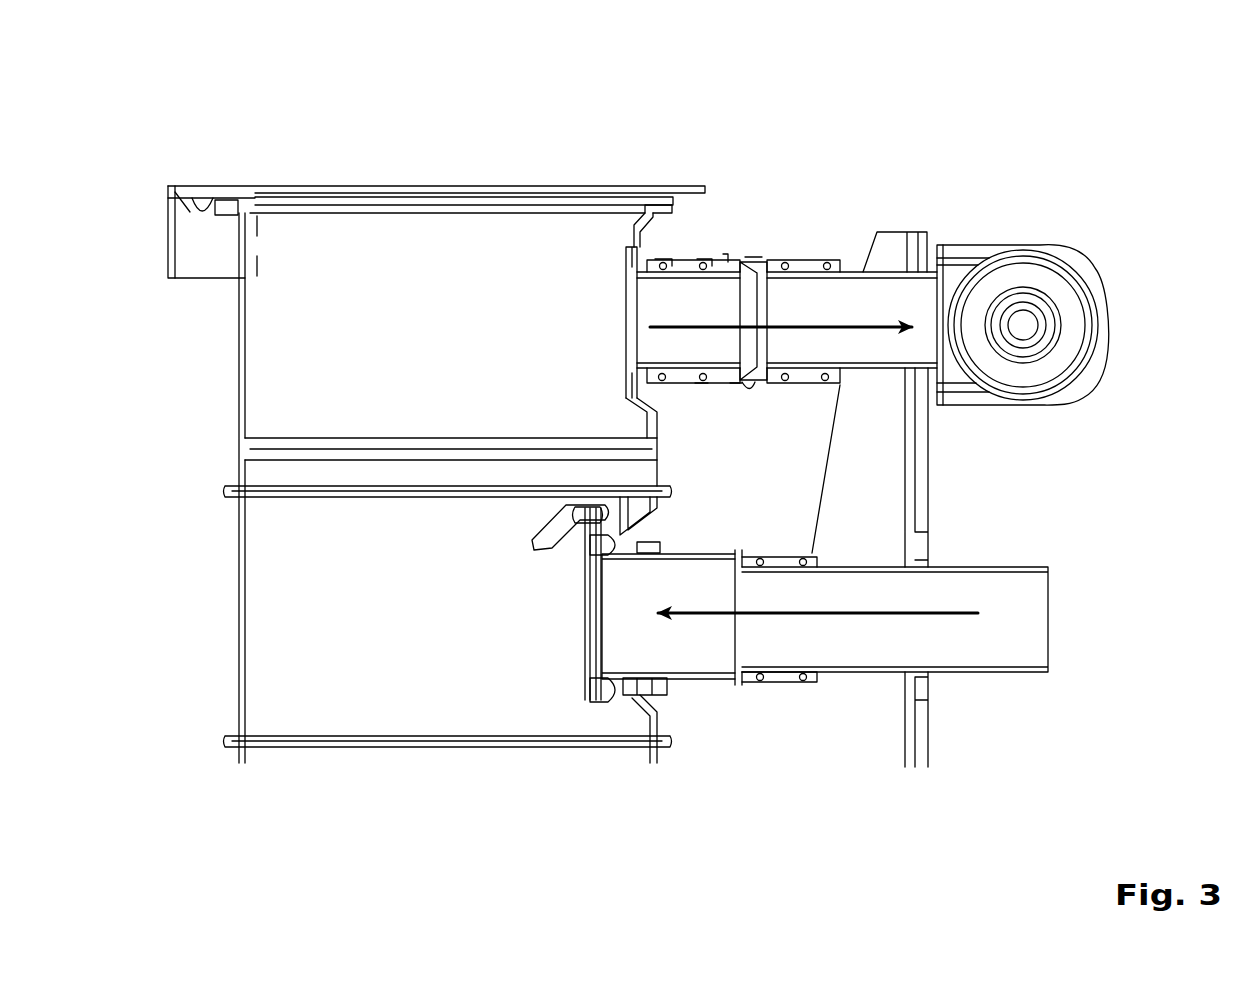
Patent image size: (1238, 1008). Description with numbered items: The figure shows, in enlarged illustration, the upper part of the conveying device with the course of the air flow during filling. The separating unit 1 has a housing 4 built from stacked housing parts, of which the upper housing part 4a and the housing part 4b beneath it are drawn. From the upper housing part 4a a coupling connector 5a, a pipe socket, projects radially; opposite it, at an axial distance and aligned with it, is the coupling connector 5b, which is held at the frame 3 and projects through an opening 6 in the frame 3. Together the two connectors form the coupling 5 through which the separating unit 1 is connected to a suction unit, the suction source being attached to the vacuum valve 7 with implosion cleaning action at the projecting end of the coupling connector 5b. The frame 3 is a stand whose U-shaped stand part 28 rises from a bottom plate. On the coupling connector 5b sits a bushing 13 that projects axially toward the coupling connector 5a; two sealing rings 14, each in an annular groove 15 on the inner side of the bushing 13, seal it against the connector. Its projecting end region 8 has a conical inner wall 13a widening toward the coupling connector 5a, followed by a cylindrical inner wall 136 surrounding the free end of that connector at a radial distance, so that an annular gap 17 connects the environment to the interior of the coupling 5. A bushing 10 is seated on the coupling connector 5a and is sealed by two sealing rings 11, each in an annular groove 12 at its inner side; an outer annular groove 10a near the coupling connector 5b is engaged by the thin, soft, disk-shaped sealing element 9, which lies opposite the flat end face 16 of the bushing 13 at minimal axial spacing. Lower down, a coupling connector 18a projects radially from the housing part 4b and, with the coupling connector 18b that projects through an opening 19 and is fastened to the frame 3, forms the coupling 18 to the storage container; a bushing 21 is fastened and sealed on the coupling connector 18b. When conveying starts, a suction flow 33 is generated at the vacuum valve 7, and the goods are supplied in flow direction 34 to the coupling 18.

The separating unit 1 is at (282, 138).
The frame 3 is at (934, 516).
The housing 4 is at (232, 549).
The upper housing part 4a is at (275, 371).
The housing part 4b is at (272, 607).
The coupling 5 is at (783, 212).
The coupling connector 5a is at (627, 368).
The coupling connector 5b is at (870, 380).
The opening 6 is at (922, 263).
The vacuum valve 7 is at (1055, 365).
The projecting end region 8 is at (738, 300).
The sealing element 9 is at (725, 381).
The bushing 10 is at (668, 262).
The annular groove 10a is at (723, 372).
The sealing ring 11 is at (675, 262).
The annular groove 12 is at (660, 262).
The bushing 13 is at (748, 262).
The conical inner wall 13a is at (755, 382).
The cylindrical inner wall 136 is at (760, 262).
The sealing ring 14 is at (816, 383).
The annular groove 15 is at (830, 262).
The flat end face 16 is at (705, 262).
The annular gap 17 is at (737, 382).
The coupling 18 is at (868, 558).
The coupling connector 18a is at (692, 680).
The coupling connector 18b is at (1022, 568).
The opening 19 is at (918, 672).
The bushing 21 is at (801, 690).
The U-shaped stand part 28 is at (910, 410).
The suction flow 33 is at (840, 322).
The flow direction 34 is at (933, 614).